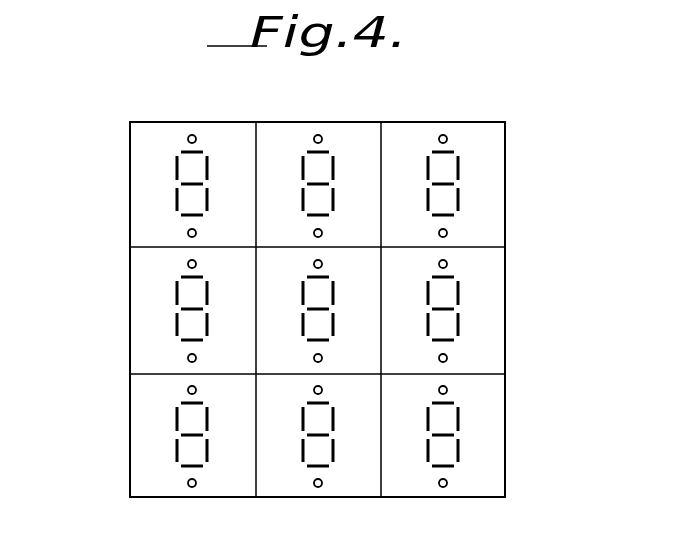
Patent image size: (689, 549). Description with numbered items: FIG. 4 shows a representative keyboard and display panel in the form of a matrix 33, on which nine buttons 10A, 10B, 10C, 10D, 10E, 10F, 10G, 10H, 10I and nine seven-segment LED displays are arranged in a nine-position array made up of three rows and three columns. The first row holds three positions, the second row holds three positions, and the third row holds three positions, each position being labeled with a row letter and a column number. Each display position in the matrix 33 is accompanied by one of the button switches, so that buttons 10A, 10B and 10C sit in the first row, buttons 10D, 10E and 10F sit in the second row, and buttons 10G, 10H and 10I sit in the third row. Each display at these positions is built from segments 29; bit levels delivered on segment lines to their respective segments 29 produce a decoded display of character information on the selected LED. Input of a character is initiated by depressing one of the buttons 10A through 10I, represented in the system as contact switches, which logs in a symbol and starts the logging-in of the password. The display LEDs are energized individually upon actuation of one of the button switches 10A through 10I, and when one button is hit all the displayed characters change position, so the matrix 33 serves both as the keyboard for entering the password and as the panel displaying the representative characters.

The button 10A is at (228, 109).
The button 10B is at (347, 109).
The button 10C is at (476, 109).
The button 10D is at (188, 265).
The button 10E is at (311, 265).
The button 10F is at (447, 265).
The button 10G is at (188, 390).
The button 10H is at (314, 390).
The button 10I is at (447, 390).
The segment 29 is at (480, 193).
The keyboard matrix 33 is at (513, 328).